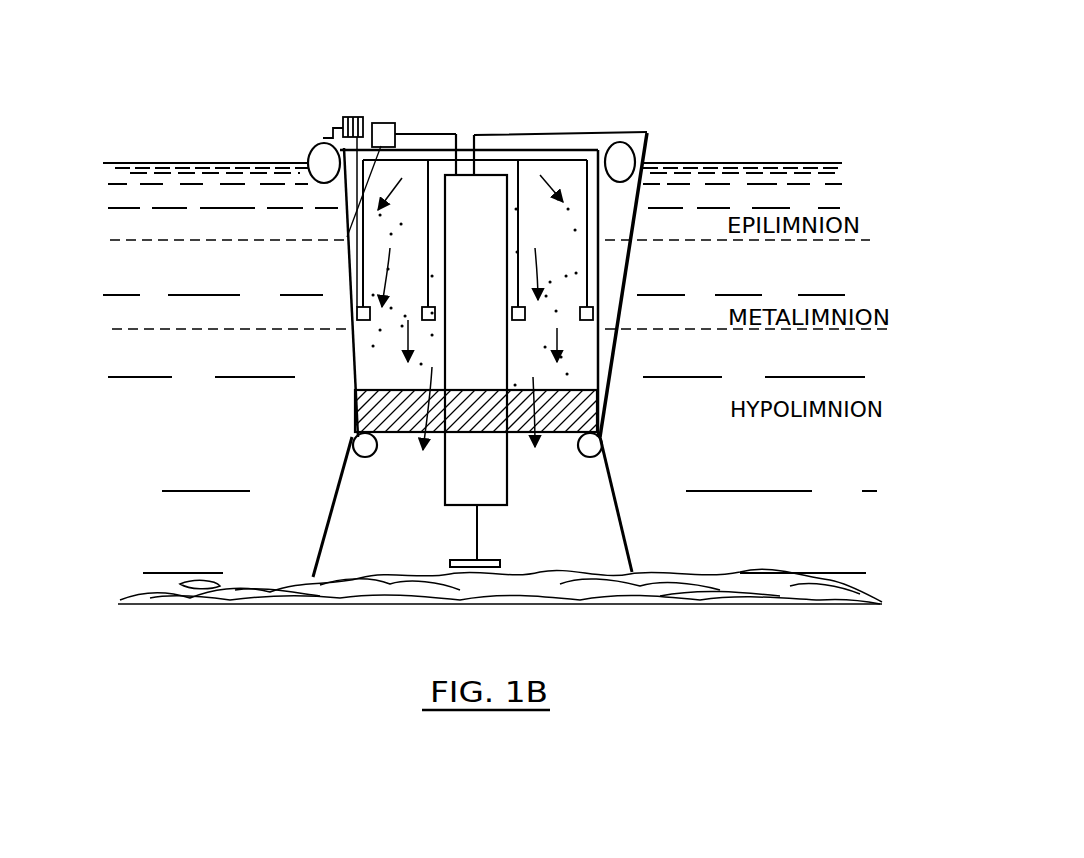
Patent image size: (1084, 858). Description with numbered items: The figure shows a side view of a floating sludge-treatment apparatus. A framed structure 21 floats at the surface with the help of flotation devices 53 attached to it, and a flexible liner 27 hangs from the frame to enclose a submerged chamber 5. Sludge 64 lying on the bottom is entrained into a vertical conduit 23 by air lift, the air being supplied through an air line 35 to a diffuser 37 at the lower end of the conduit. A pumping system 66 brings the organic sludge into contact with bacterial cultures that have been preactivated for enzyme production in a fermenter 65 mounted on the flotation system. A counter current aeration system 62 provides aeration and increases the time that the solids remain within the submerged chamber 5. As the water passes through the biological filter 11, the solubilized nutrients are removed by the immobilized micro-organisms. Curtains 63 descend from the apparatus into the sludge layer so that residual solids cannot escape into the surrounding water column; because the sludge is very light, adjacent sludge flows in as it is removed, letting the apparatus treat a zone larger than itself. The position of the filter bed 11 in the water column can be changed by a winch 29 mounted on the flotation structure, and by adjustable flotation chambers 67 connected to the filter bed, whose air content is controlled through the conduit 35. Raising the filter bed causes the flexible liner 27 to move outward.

The submerged chamber 5 is at (560, 278).
The biological filter 11 is at (553, 417).
The framed structure 21 is at (596, 152).
The vertical conduit 23 is at (475, 460).
The flexible liner 27 is at (603, 248).
The winch 29 is at (343, 122).
The air line 35 is at (645, 135).
The diffuser 37 is at (460, 558).
The flotation devices 53 is at (315, 157).
The counter current aeration system 62 is at (593, 315).
The curtains 63 is at (623, 528).
The sludge 64 is at (653, 592).
The fermenter 65 is at (383, 125).
The pumping system 66 is at (347, 237).
The adjustable flotation chambers 67 is at (590, 448).